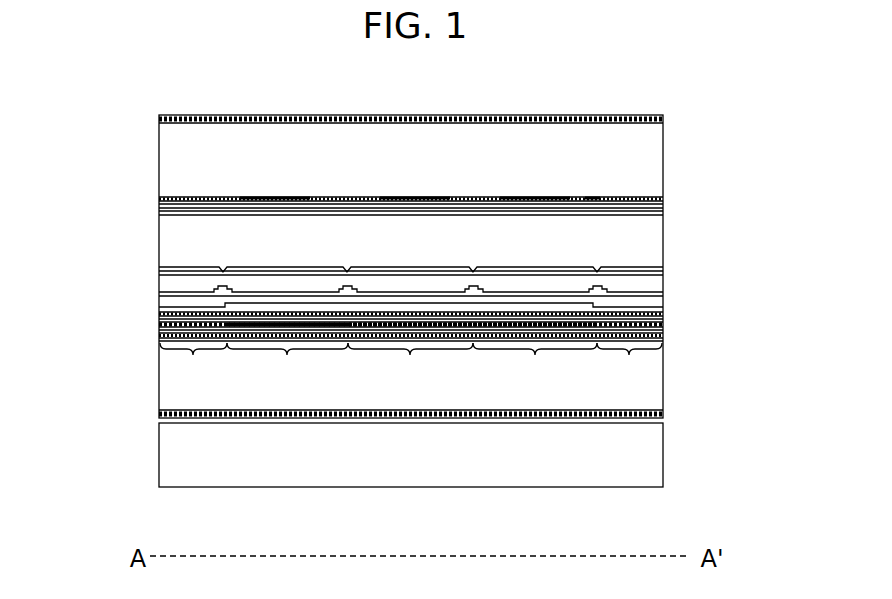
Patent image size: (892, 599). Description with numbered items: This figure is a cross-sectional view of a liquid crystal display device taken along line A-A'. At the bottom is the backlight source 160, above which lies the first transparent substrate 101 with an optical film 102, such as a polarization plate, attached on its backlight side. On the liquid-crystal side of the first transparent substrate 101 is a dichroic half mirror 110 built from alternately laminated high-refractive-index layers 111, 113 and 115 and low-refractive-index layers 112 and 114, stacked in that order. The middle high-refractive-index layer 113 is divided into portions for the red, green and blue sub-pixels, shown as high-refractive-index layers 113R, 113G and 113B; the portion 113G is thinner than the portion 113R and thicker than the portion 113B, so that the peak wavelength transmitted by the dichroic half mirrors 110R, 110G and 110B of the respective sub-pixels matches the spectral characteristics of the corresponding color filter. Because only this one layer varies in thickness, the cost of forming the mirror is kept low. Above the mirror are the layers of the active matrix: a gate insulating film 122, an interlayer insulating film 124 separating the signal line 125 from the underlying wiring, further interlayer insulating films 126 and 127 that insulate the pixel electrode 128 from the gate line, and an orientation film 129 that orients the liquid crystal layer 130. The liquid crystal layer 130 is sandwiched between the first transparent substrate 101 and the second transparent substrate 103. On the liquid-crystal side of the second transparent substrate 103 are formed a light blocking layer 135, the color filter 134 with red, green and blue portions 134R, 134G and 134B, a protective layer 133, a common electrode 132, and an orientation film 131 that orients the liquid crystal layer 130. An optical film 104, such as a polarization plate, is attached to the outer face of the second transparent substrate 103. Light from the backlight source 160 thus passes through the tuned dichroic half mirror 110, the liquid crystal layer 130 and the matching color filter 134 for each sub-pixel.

The first transparent substrate 101 is at (178, 398).
The optical film 102 is at (663, 413).
The second transparent substrate 103 is at (178, 137).
The optical film 104 is at (663, 116).
The dichroic half mirror 110 is at (456, 410).
The dichroic half mirror for red sub-pixel 110R is at (444, 364).
The dichroic half mirror for green sub-pixel 110G is at (410, 364).
The dichroic half mirror for blue sub-pixel 110B is at (378, 364).
The high-refractive-index layer 111 is at (458, 380).
The low-refractive-index layer 112 is at (663, 330).
The high-refractive-index layer 113 is at (663, 325).
The high-refractive-index layer for red sub-pixel 113R is at (282, 429).
The high-refractive-index layer for green sub-pixel 113G is at (404, 429).
The high-refractive-index layer for blue sub-pixel 113B is at (529, 428).
The low-refractive-index layer 114 is at (663, 320).
The high-refractive-index layer 115 is at (663, 315).
The gate insulating film 122 is at (162, 310).
The interlayer insulating film 124 is at (162, 300).
The signal line 125 is at (212, 292).
The interlayer insulating film 126 is at (663, 276).
The interlayer insulating film 127 is at (663, 268).
The pixel electrode 128 is at (411, 164).
The orientation film 129 is at (411, 166).
The liquid crystal layer 130 is at (655, 238).
The orientation film 131 is at (663, 213).
The common electrode 132 is at (162, 208).
The protective layer 133 is at (663, 205).
The color filter 134 is at (663, 197).
The red color filter 134R is at (275, 129).
The green color filter 134G is at (412, 129).
The blue color filter 134B is at (513, 129).
The light blocking layer 135 is at (567, 129).
The backlight source 160 is at (178, 470).